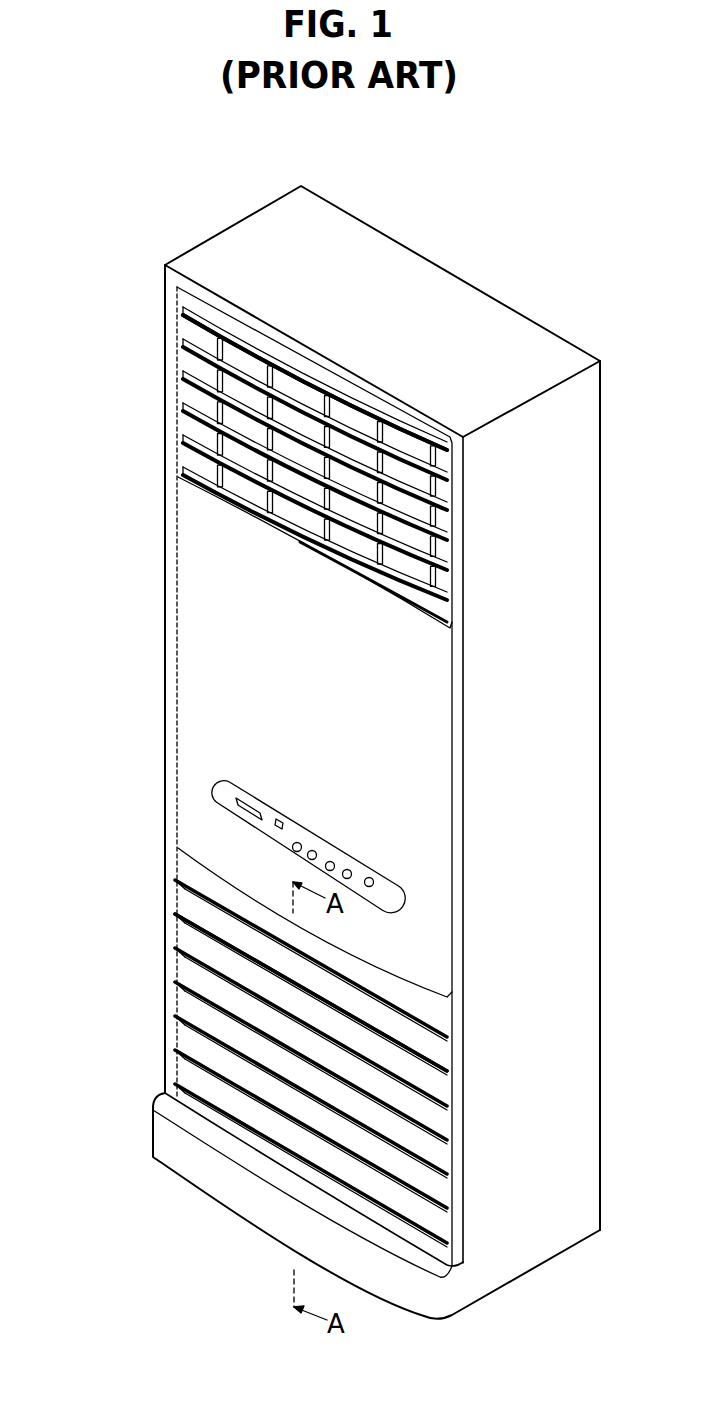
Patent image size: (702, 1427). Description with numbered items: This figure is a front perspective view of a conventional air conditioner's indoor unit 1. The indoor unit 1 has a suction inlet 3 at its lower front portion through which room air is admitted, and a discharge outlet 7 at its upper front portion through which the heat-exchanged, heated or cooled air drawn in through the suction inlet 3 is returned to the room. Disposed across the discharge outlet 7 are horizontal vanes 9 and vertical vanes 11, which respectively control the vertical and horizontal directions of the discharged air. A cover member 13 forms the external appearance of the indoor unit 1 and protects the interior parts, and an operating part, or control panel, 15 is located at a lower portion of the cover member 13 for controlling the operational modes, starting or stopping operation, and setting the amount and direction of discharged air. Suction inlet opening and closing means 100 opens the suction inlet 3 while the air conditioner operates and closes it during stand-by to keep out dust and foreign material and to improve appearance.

The indoor unit 1 is at (568, 608).
The suction inlet 3 is at (190, 993).
The discharge outlet 7 is at (210, 455).
The horizontal vanes 9 is at (203, 358).
The vertical vanes 11 is at (215, 389).
The cover member 13 is at (187, 707).
The operating part (control panel) 15 is at (225, 797).
The suction inlet opening and closing means 100 is at (196, 907).